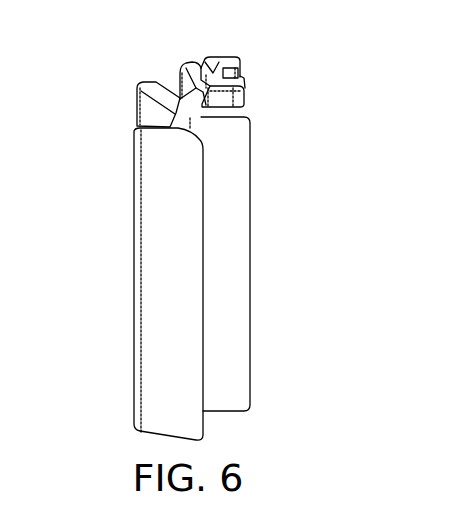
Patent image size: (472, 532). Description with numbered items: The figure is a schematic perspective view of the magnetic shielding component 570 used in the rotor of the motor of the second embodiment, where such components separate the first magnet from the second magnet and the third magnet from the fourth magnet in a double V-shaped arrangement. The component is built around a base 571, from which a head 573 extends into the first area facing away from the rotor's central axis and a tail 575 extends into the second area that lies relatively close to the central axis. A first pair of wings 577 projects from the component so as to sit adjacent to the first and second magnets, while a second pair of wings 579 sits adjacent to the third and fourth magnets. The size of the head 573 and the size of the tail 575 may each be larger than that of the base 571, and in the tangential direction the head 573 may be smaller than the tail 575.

The magnetic shielding component 570 is at (230, 224).
The base 571 is at (195, 127).
The head 573 is at (221, 58).
The tail 575 is at (137, 133).
The first pair of wings 577 is at (147, 86).
The second pair of wings 579 is at (192, 66).